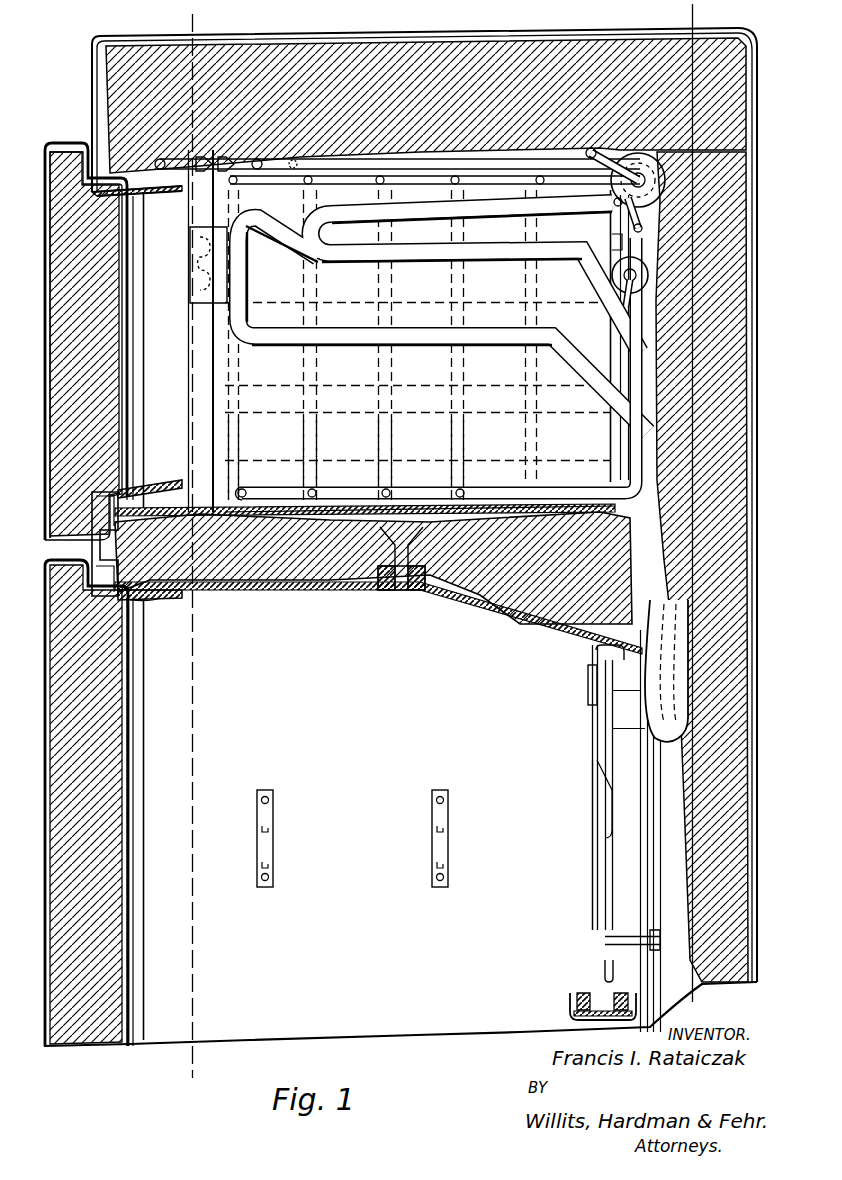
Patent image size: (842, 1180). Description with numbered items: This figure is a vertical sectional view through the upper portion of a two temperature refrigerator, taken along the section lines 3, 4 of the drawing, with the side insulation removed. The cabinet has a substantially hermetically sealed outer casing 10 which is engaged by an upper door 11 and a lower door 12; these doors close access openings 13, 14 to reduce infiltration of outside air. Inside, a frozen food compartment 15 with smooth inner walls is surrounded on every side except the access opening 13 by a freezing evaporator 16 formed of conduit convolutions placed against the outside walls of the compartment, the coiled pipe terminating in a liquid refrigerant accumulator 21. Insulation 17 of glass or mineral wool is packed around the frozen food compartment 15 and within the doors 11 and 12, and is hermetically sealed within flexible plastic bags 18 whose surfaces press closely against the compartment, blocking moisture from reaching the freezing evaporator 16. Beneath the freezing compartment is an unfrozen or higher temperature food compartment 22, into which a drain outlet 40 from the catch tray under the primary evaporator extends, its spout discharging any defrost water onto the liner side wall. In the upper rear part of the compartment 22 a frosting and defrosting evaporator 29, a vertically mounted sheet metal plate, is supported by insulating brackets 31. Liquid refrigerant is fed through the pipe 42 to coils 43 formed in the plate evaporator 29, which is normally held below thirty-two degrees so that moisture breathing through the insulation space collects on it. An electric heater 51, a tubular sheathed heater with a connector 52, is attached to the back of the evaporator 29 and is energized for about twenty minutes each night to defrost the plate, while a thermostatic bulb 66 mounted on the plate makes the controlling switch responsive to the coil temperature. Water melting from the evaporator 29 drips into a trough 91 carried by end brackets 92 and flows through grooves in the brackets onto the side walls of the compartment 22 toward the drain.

The section line 3- 3 is at (215, 26).
The section line 4- 4 is at (670, 19).
The outer casing 10 is at (757, 780).
The upper door 11 is at (40, 158).
The lower door 12 is at (42, 1040).
The access opening 13 is at (134, 490).
The access opening 14 is at (130, 596).
The frozen food compartment 15 is at (505, 485).
The freezing evaporator 16 is at (318, 494).
The insulation 17 is at (735, 80).
The flexible casings or bags 18 is at (700, 488).
The liquid refrigerant accumulator 21 is at (598, 190).
The unfrozen food compartment 22 is at (384, 723).
The frosting and defrosting evaporator 29 is at (598, 712).
The insulating brackets 31 is at (598, 660).
The drain outlet 40 is at (400, 590).
The pipe 42 is at (626, 728).
The coils 43 is at (594, 763).
The electric heater 51 is at (616, 840).
The connector 52 is at (610, 978).
The thermostatic bulb 66 is at (590, 688).
The trough 91 is at (576, 996).
The end brackets 92 is at (570, 1010).